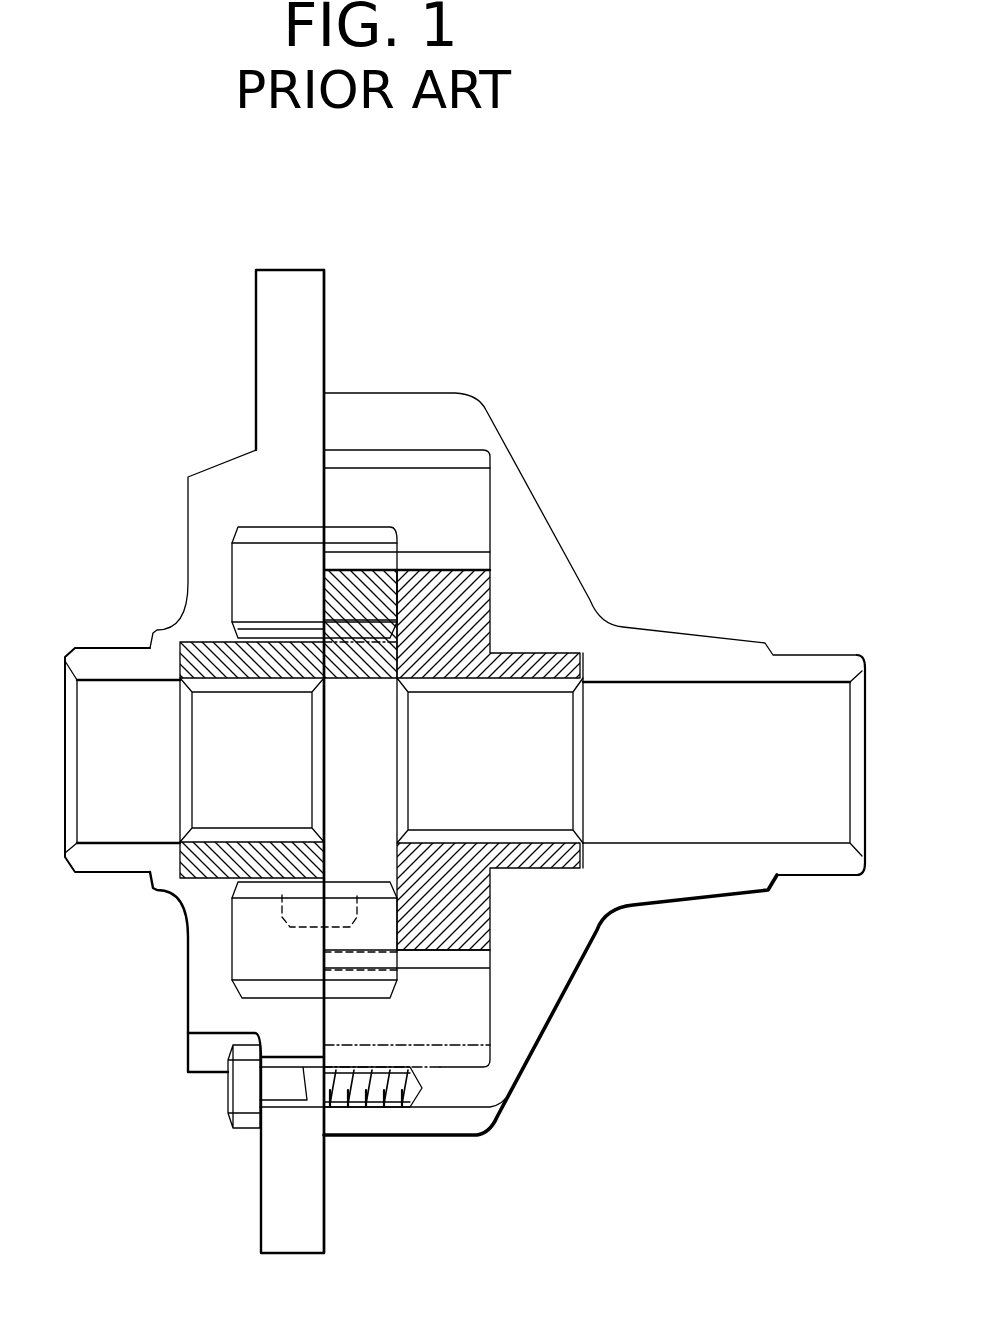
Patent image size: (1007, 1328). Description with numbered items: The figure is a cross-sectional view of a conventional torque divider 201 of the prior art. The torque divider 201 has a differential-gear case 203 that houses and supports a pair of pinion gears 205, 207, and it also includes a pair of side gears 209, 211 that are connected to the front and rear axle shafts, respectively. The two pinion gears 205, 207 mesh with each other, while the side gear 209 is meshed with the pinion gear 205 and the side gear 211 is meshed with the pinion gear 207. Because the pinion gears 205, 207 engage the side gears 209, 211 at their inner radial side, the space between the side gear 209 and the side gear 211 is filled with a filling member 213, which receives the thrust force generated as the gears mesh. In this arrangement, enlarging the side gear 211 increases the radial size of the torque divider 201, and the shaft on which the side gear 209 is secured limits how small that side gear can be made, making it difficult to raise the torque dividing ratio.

The torque divider 201 is at (569, 292).
The differential-gear case 203 is at (477, 418).
The pinion gear 205 is at (240, 947).
The pinion gear 207 is at (477, 510).
The side gear 209 is at (235, 630).
The side gear 211 is at (480, 958).
The filling member 213 is at (355, 668).